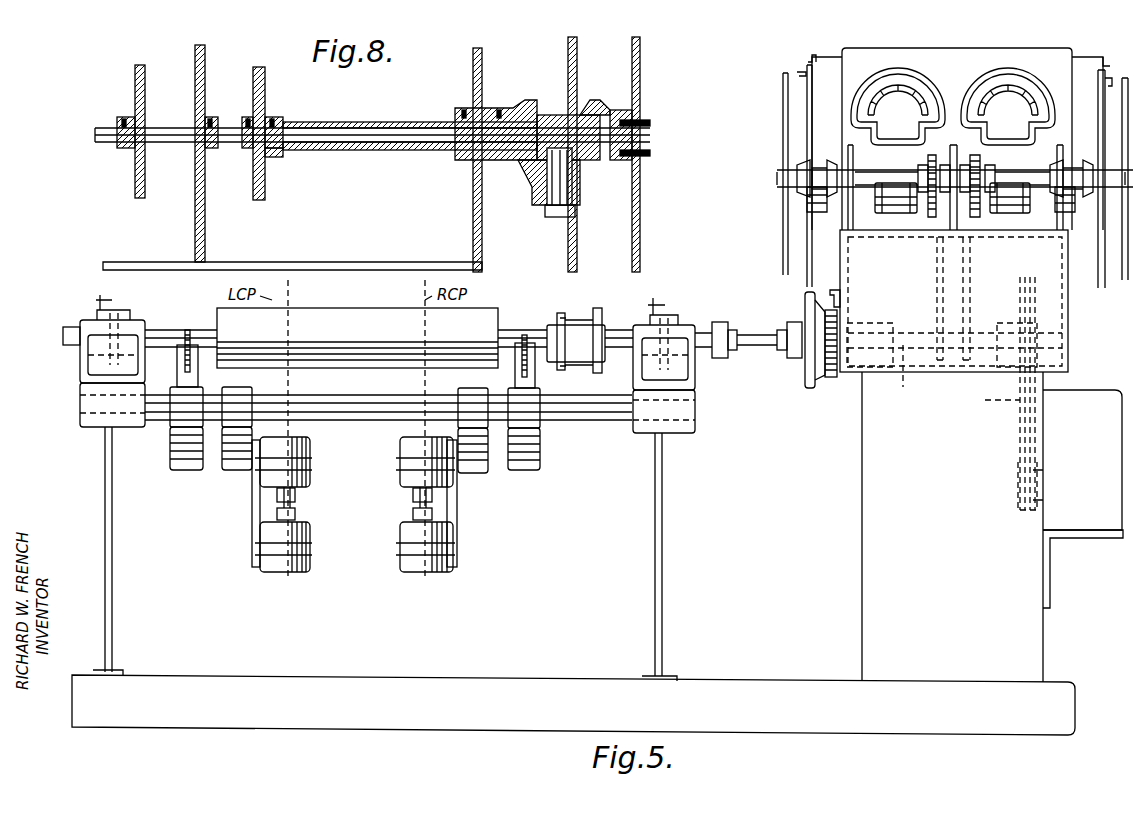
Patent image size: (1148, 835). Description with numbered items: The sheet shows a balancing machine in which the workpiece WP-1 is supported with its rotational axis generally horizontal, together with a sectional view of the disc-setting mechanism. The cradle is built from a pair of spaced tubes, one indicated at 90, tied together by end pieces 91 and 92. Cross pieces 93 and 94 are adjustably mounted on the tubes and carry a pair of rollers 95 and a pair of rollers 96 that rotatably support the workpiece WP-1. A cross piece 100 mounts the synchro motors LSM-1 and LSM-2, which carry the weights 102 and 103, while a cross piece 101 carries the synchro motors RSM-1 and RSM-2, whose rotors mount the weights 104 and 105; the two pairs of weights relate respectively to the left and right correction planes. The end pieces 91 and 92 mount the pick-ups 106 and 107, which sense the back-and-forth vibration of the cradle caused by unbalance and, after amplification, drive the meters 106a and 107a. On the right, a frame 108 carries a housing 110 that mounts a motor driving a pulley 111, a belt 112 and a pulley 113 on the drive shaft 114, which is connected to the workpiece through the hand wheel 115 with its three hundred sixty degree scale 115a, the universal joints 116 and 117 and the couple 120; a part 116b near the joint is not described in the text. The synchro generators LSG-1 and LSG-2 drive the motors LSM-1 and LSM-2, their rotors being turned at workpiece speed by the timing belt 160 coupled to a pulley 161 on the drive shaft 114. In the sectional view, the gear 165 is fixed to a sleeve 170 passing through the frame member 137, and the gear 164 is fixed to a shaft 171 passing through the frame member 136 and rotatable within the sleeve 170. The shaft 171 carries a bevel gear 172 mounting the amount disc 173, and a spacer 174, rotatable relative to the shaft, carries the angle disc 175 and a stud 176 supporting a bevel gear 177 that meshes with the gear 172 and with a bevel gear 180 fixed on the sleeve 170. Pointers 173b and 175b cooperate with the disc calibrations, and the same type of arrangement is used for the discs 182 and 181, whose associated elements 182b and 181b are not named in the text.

In FIG. 5, the tube 90 is at (592, 420).
In FIG. 5, the end piece 91 is at (696, 406).
In FIG. 5, the end piece 92 is at (79, 401).
In FIG. 5, the cross piece 93 is at (184, 472).
In FIG. 5, the cross piece 94 is at (526, 471).
In FIG. 5, the rollers 95 is at (184, 366).
In FIG. 5, the rollers 96 is at (530, 369).
In FIG. 5, the cross piece 100 is at (234, 472).
In FIG. 5, the cross piece 101 is at (478, 475).
In FIG. 5, the weight 102 is at (296, 493).
In FIG. 5, the weight 103 is at (300, 511).
In FIG. 5, the weight 104 is at (412, 495).
In FIG. 5, the weight 105 is at (412, 513).
In FIG. 5, the pick-up 106 is at (96, 312).
In FIG. 5, the pick-up 107 is at (678, 316).
In FIG. 5, the meter 106a is at (898, 106).
In FIG. 5, the meter 107a is at (1008, 106).
In FIG. 5, the frame 108 is at (848, 515).
In FIG. 5, the housing 110 is at (1083, 499).
In FIG. 5, the pulley 111 is at (1020, 490).
In FIG. 5, the belt 112 is at (1020, 440).
In FIG. 5, the pulley 113 is at (990, 400).
In FIG. 5, the drive shaft 114 is at (905, 389).
In FIG. 5, the hand wheel 115 is at (809, 389).
In FIG. 5, the scale 115a is at (822, 372).
In FIG. 5, the universal joint 116 is at (790, 360).
In FIG. 5, the bracket 116b is at (832, 290).
In FIG. 5, the universal joint 117 is at (722, 360).
In FIG. 5, the couple 120 is at (580, 312).
In FIG. 8, the frame member 136 is at (206, 226).
In FIG. 5, the frame member 136 is at (970, 226).
In FIG. 8, the frame member 137 is at (472, 230).
In FIG. 5, the frame member 137 is at (1060, 232).
In FIG. 5, the timing belt 160 is at (936, 308).
In FIG. 5, the pulley 161 is at (936, 335).
In FIG. 8, the gear 164 is at (140, 64).
In FIG. 8, the gear 165 is at (259, 66).
In FIG. 8, the sleeve 170 is at (372, 121).
In FIG. 8, the shaft 171 is at (180, 143).
In FIG. 8, the bevel gear 172 is at (598, 101).
In FIG. 8, the amount disc 173 is at (641, 50).
In FIG. 5, the amount disc 173 is at (1129, 148).
In FIG. 5, the pointer 173b is at (1120, 48).
In FIG. 8, the spacer 174 is at (552, 114).
In FIG. 8, the angle disc 175 is at (566, 48).
In FIG. 5, the angle disc 175 is at (1098, 146).
In FIG. 5, the pointer 175b is at (1107, 90).
In FIG. 8, the stud 176 is at (557, 212).
In FIG. 8, the bevel gear 177 is at (530, 190).
In FIG. 8, the bevel gear 180 is at (518, 100).
In FIG. 5, the disc 181 is at (813, 130).
In FIG. 5, the bracket 181b is at (798, 76).
In FIG. 5, the disc 182 is at (782, 118).
In FIG. 5, the bracket 182b is at (810, 56).
In FIG. 5, the workpiece WP-1 is at (312, 308).
In FIG. 5, the synchro motor LSM-1 is at (300, 460).
In FIG. 5, the synchro motor LSM-2 is at (302, 536).
In FIG. 5, the synchro motor RSM-1 is at (404, 452).
In FIG. 5, the synchro motor RSM-2 is at (404, 540).
In FIG. 5, the synchro generator LSG-1 is at (907, 214).
In FIG. 5, the synchro generator LSG-2 is at (1003, 214).